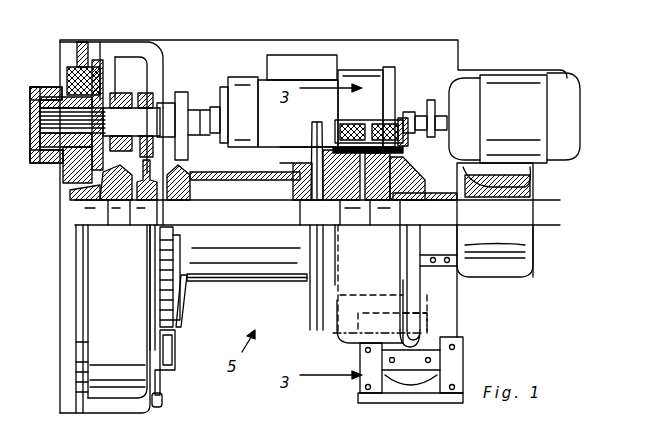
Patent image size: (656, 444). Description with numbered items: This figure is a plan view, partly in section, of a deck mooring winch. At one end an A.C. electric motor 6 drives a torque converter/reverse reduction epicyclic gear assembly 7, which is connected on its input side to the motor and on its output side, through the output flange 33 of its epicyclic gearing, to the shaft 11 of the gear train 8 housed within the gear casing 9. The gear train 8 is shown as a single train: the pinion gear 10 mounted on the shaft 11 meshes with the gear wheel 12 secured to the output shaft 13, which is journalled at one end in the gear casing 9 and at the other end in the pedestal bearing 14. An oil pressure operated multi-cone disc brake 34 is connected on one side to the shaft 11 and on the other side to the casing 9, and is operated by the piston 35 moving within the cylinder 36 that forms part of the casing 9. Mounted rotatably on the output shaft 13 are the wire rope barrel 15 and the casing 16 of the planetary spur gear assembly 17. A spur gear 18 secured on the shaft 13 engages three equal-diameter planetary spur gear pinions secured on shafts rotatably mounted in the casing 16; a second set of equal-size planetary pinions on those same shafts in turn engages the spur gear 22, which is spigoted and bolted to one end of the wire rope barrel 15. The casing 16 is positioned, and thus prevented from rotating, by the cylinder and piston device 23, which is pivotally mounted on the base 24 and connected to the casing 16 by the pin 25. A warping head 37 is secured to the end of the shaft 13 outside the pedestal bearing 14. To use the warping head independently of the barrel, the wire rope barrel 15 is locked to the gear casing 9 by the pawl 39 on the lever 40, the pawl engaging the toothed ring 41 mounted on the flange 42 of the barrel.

The A.C. electric motor 6 is at (508, 92).
The torque converter/reverse reduction epicyclic gear assembly 7 is at (313, 68).
The gear train 8 is at (140, 88).
The gear casing 9 is at (121, 385).
The pinion gear 10 is at (119, 94).
The shaft 11 is at (133, 117).
The gear wheel 12 is at (125, 205).
The output shaft 13 is at (242, 215).
The pedestal bearing 14 is at (440, 272).
The wire rope barrel 15 is at (215, 276).
The casing 16 is at (338, 320).
The planetary spur gear assembly 17 is at (377, 108).
The spur gear 18 is at (380, 196).
The spur gear 22 is at (343, 196).
The cylinder and piston device 23 is at (356, 388).
The base 24 is at (238, 50).
The pin 25 is at (430, 314).
The output flange 33 is at (185, 104).
The multi-cone disc brake 34 is at (106, 72).
The piston 35 is at (55, 160).
The cylinder 36 is at (42, 86).
The warping head 37 is at (507, 252).
The pawl 39 is at (176, 338).
The lever 40 is at (161, 378).
The toothed ring 41 is at (172, 300).
The flange 42 is at (187, 278).